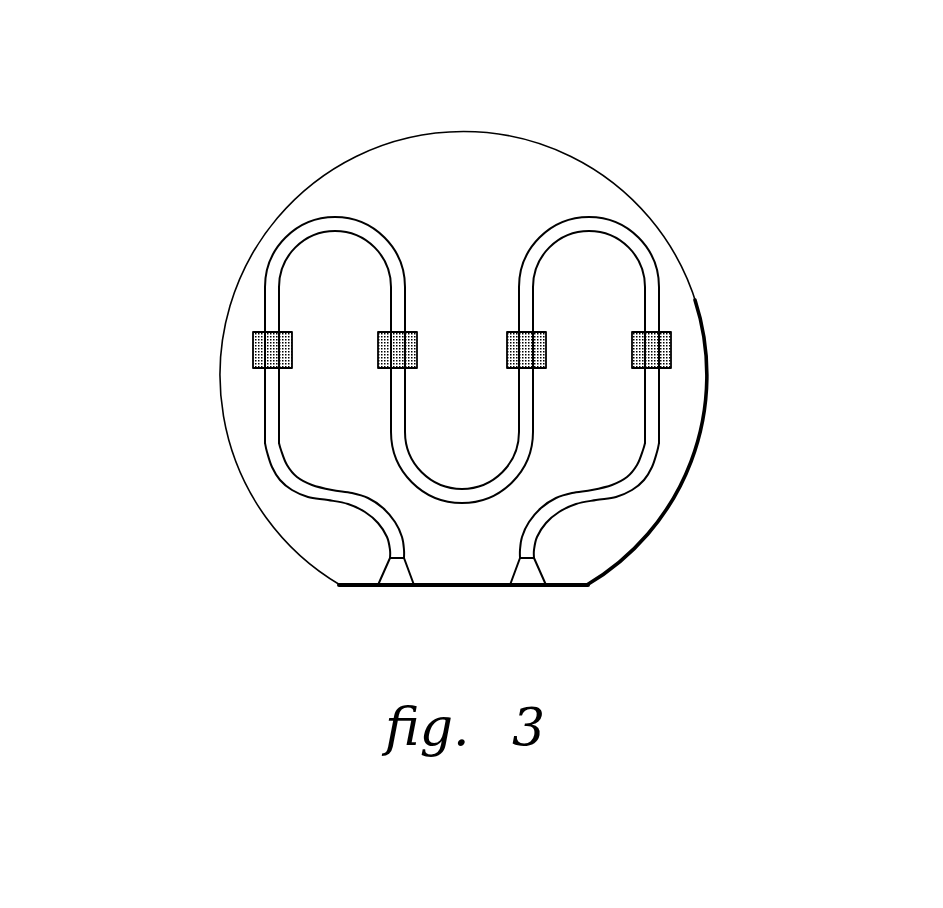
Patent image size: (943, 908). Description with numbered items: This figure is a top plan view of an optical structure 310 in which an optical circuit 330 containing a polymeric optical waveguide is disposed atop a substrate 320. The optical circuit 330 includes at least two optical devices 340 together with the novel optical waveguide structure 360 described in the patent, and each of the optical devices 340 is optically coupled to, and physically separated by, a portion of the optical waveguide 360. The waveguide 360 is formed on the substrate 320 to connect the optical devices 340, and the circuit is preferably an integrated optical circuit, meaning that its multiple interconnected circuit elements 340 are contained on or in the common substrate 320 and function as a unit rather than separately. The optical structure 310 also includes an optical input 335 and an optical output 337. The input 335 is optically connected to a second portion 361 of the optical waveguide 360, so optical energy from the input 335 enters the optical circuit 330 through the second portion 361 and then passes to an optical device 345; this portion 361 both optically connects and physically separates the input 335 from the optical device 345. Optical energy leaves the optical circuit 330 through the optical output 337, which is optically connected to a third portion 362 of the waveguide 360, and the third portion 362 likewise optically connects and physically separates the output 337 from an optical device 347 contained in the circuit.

The optical structure 310 is at (789, 102).
The substrate 320 is at (473, 191).
The optical circuit 330 is at (760, 220).
The optical input 335 is at (402, 603).
The optical output 337 is at (526, 603).
The optical devices 340 is at (378, 352).
The optical device 345 is at (254, 348).
The optical device 347 is at (671, 343).
The optical waveguide structure 360 is at (442, 483).
The second portion of optical waveguide 361 is at (292, 492).
The third portion of optical waveguide 362 is at (637, 487).